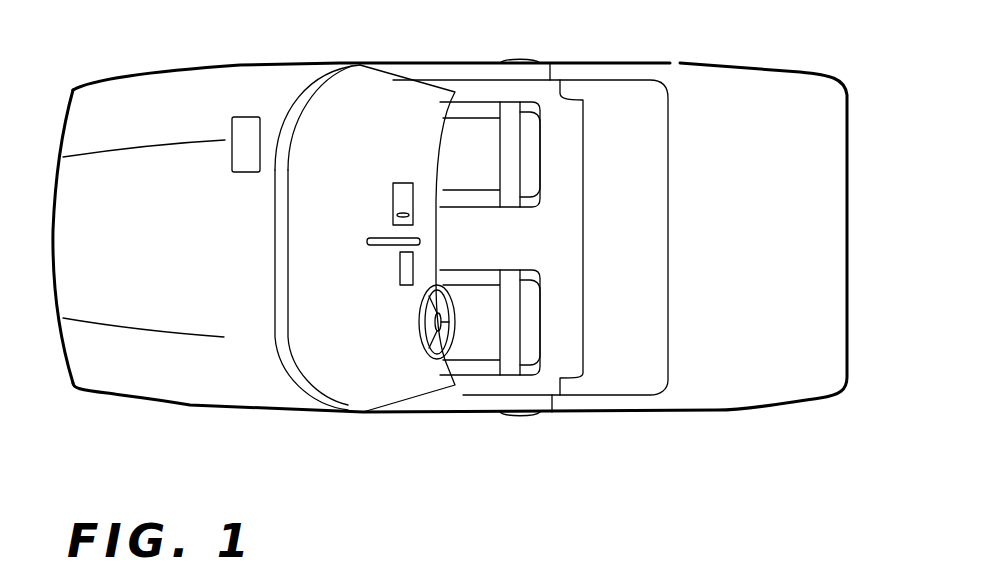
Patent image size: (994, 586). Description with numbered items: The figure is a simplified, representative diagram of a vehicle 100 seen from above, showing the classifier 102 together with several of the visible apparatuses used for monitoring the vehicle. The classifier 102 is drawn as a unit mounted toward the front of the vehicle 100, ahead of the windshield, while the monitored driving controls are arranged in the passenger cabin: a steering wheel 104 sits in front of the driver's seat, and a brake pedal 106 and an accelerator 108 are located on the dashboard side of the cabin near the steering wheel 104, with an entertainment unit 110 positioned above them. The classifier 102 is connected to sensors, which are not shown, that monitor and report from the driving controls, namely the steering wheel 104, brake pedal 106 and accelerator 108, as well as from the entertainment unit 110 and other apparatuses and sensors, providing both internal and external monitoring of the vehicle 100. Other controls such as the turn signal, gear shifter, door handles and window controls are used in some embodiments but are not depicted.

The vehicle 100 is at (128, 465).
The classifier 102 is at (242, 127).
The steering wheel 104 is at (450, 305).
The brake pedal 106 is at (402, 268).
The accelerator 108 is at (382, 238).
The entertainment unit 110 is at (398, 188).